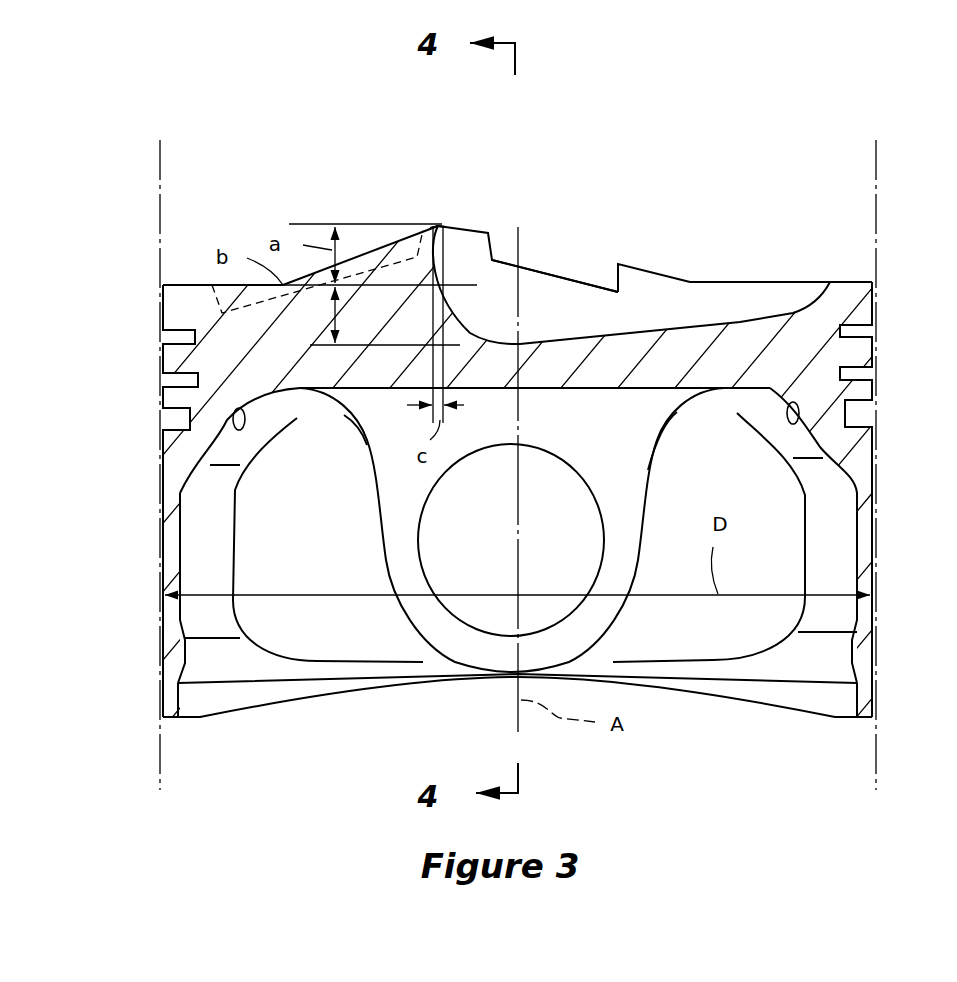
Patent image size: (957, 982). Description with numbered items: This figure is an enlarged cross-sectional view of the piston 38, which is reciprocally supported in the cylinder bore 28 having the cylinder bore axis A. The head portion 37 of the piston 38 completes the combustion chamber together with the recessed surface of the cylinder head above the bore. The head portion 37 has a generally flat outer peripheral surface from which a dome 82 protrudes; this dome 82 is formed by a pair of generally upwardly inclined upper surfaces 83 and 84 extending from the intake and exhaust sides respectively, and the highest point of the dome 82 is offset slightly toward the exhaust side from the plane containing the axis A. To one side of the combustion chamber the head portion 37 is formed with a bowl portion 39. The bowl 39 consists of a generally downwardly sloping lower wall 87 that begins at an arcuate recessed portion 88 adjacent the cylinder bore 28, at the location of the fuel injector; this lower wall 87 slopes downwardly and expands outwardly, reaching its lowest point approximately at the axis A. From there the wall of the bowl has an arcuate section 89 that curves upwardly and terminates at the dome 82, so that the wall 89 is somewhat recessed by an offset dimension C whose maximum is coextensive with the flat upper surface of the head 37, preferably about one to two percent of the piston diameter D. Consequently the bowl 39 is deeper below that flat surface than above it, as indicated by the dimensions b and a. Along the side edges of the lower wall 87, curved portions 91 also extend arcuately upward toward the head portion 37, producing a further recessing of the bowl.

The cylinder bore 28 is at (872, 208).
The head portion 37 is at (202, 285).
The piston 38 is at (160, 460).
The bowl portion 39 is at (583, 300).
The dome 82 is at (441, 225).
The upper surface 83 is at (647, 267).
The upper surface 84 is at (373, 250).
The lower wall 87 is at (653, 323).
The arcuate recessed portion 88 is at (830, 283).
The arcuate section 89 is at (433, 263).
The curved portions 91 is at (537, 293).